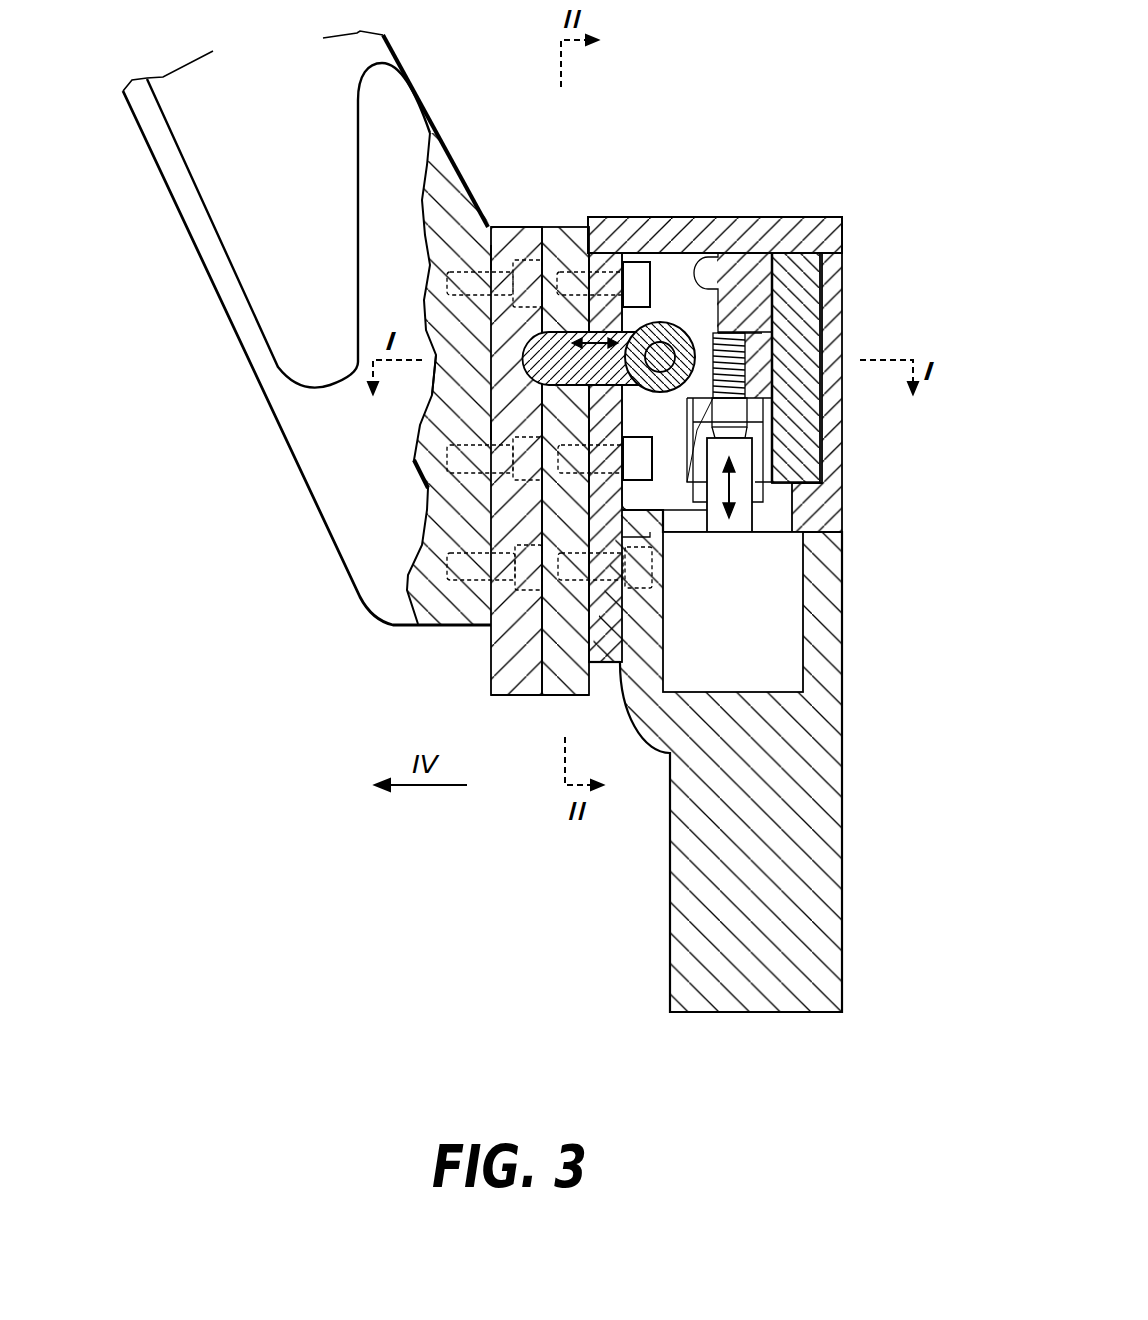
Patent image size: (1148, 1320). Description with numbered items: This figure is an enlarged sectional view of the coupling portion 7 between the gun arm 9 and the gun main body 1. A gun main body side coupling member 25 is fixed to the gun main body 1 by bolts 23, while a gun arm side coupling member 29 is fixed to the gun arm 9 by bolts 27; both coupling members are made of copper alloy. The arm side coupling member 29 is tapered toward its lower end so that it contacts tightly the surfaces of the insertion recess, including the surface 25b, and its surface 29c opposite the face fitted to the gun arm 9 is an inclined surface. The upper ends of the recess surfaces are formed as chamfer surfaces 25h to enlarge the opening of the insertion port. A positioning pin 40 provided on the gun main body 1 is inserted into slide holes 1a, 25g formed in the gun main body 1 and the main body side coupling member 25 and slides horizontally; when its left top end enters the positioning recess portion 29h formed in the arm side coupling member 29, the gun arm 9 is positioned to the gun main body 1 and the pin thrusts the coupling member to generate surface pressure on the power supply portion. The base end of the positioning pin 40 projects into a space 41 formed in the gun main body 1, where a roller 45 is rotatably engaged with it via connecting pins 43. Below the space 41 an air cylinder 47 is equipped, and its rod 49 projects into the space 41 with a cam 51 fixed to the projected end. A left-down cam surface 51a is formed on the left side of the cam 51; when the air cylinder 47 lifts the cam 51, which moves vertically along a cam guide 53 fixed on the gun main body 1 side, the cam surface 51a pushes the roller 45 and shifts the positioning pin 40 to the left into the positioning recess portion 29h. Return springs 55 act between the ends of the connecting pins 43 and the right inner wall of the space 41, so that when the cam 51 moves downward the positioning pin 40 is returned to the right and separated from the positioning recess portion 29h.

The gun main body 1 is at (827, 217).
The slide hole 1a is at (668, 318).
The coupling portion 7 is at (550, 208).
The gun arm 9 is at (290, 457).
The bolts 23 is at (640, 320).
The gun main body side coupling member 25 is at (563, 226).
The surface 25b is at (490, 510).
The slide hole 25g is at (457, 430).
The chamfer surfaces 25h is at (547, 233).
The bolts 27 is at (488, 257).
The gun arm side coupling member 29 is at (413, 570).
The surface 29c is at (590, 697).
The positioning recess portion 29h is at (440, 383).
The positioning pin 40 is at (597, 300).
The space 41 is at (678, 430).
The connecting pins 43 is at (690, 325).
The roller 45 is at (656, 283).
The air cylinder 47 is at (777, 600).
The rod 49 is at (742, 452).
The cam 51 is at (777, 250).
The cam surface 51a is at (707, 317).
The cam guide 53 is at (798, 415).
The return springs 55 is at (775, 318).